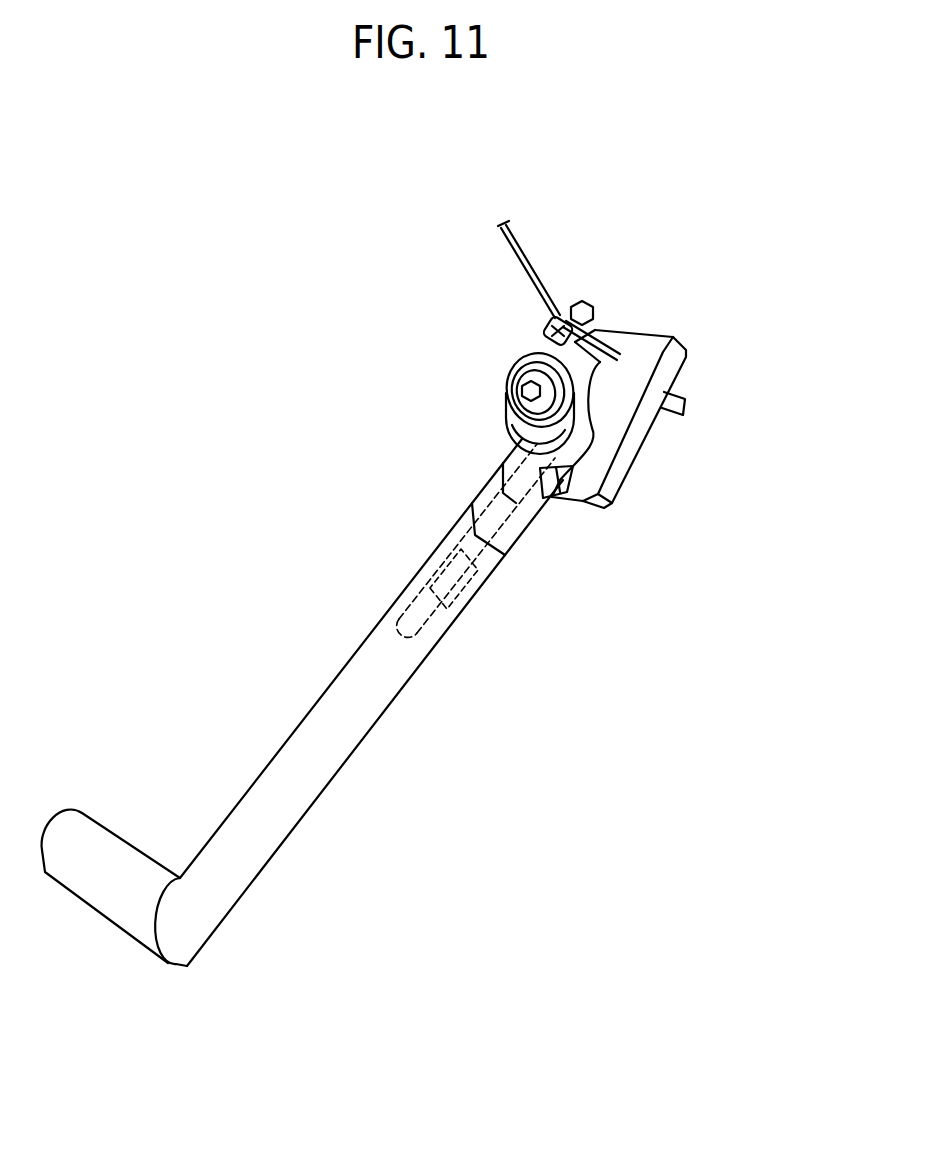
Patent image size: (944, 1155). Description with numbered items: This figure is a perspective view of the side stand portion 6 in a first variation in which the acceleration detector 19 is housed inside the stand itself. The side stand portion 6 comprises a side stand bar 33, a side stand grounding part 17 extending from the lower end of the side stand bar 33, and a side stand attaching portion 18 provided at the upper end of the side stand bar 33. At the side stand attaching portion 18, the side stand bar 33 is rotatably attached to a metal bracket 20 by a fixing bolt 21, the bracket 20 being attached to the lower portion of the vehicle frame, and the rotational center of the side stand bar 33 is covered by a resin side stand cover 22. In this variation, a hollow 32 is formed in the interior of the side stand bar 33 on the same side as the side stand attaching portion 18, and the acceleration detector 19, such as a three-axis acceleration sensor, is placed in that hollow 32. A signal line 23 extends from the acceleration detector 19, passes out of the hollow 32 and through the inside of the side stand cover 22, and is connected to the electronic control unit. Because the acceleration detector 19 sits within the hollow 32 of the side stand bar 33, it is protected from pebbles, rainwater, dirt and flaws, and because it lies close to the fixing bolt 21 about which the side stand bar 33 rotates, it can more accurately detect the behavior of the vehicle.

The side stand portion 6 is at (325, 425).
The side stand grounding part 17 is at (130, 905).
The side stand attaching portion 18 is at (630, 475).
The acceleration detector 19 is at (433, 552).
The bracket 20 is at (643, 348).
The fixing bolt 21 is at (512, 388).
The side stand cover 22 is at (590, 363).
The signal line 23 is at (525, 260).
The hollow 32 is at (400, 613).
The side stand bar 33 is at (280, 783).